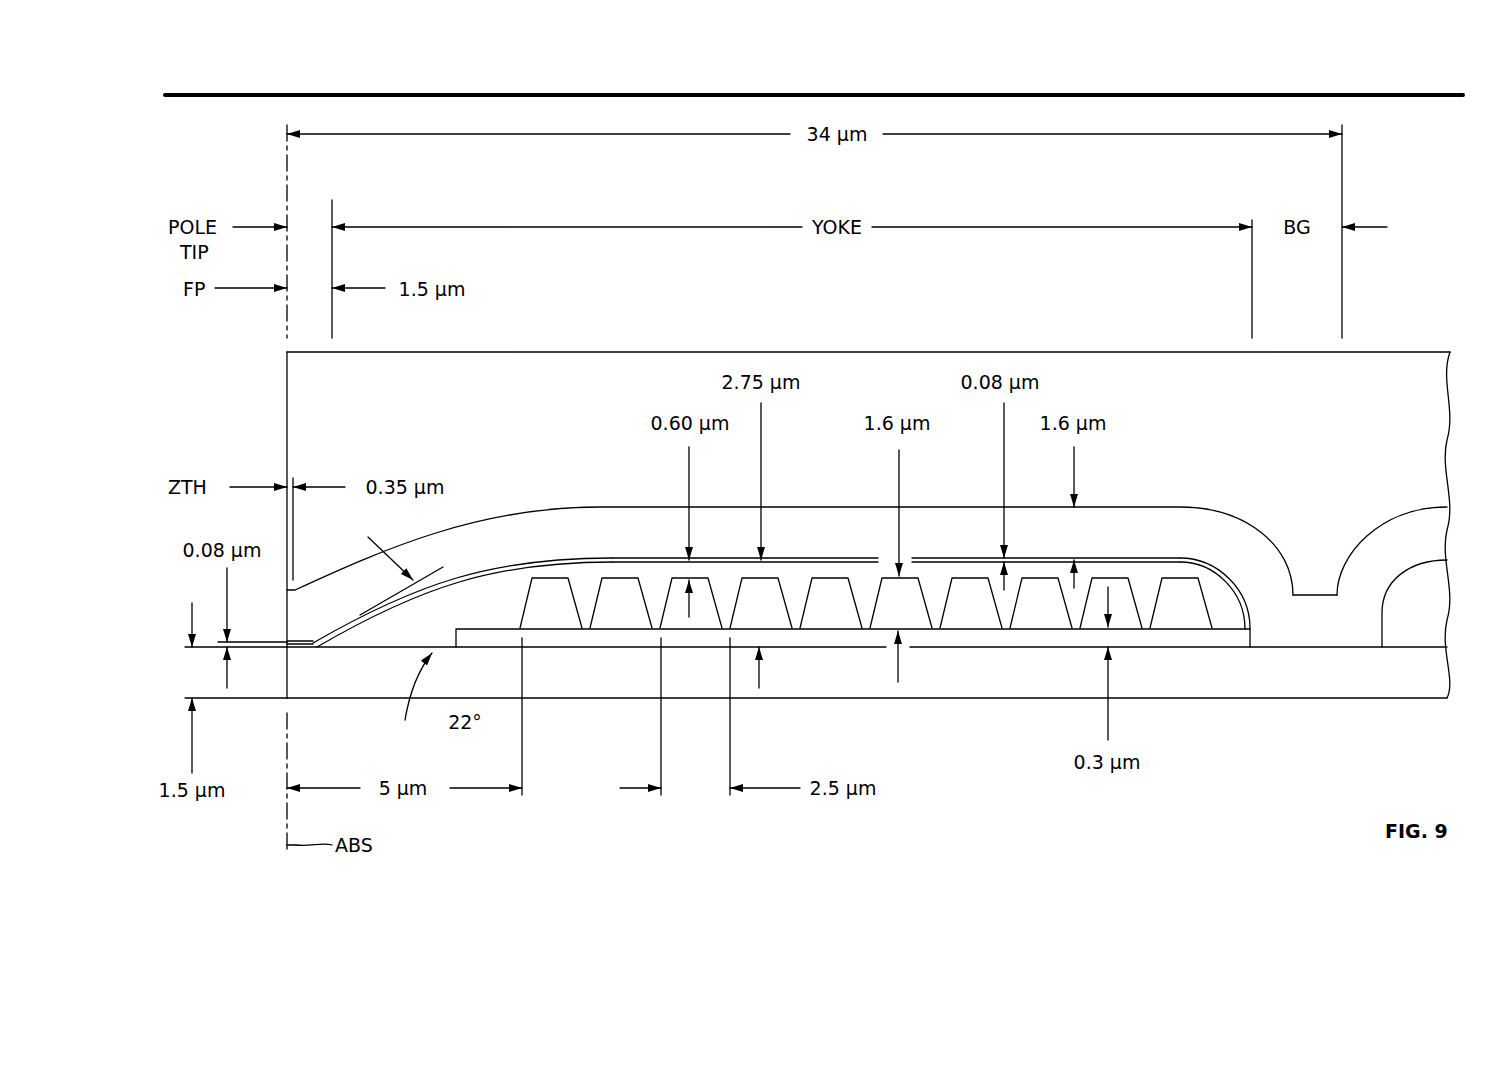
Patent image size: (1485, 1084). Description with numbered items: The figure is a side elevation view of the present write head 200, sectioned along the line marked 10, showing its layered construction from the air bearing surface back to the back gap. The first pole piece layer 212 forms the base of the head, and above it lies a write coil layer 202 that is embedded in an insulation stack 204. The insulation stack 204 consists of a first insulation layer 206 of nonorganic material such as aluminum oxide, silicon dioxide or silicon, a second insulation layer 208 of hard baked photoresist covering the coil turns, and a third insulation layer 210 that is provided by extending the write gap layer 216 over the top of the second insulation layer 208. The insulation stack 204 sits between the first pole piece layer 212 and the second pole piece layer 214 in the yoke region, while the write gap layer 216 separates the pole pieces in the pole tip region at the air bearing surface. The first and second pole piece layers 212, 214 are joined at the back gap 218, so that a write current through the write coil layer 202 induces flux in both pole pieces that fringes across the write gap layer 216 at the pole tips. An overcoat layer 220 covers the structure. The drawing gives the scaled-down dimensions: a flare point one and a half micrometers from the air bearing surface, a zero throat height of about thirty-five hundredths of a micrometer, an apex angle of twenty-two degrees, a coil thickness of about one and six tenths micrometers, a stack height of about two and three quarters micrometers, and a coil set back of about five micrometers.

The section line 10 is at (175, 93).
The write head 200 is at (1372, 323).
The write coil layer 202 is at (778, 587).
The insulation stack 204 is at (617, 557).
The first insulation layer 206 is at (973, 642).
The second insulation layer 208 is at (1140, 577).
The third insulation layer 210 is at (557, 560).
The first pole piece layer 212 is at (1267, 690).
The second pole piece layer 214 is at (1218, 525).
The write gap layer 216 is at (953, 555).
The back gap 218 is at (1318, 645).
The overcoat layer 220 is at (648, 362).